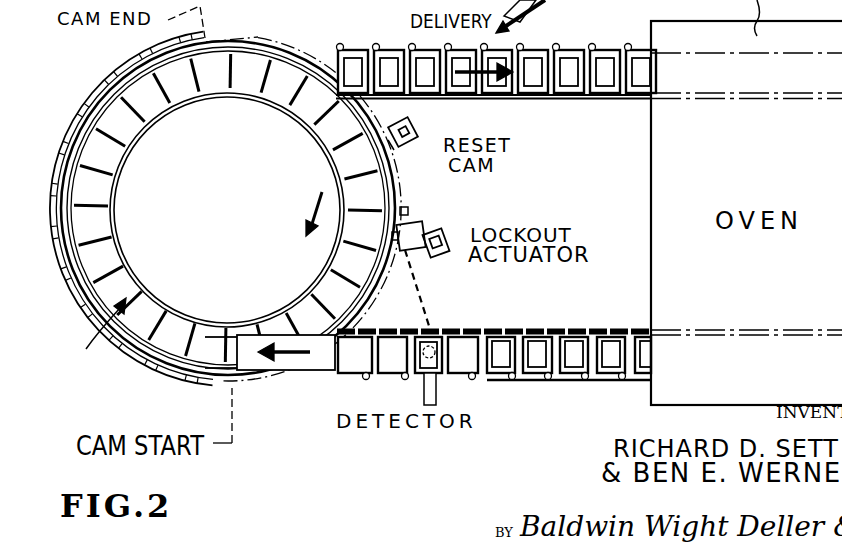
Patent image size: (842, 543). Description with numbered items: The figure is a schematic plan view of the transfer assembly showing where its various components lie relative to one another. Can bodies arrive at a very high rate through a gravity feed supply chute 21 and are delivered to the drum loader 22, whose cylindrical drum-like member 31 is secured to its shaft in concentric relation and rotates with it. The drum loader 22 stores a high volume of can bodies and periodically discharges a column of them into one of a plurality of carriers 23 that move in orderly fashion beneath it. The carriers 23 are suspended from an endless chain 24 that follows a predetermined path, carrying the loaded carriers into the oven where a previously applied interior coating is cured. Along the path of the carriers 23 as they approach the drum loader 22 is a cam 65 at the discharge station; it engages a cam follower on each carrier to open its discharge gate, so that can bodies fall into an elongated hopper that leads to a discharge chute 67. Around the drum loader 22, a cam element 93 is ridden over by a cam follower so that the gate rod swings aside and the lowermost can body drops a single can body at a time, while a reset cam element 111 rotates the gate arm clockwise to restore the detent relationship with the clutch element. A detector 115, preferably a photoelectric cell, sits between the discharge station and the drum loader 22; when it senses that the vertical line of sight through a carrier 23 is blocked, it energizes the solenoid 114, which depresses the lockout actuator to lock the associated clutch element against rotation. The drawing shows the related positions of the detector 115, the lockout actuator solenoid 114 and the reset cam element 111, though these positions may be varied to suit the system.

The gravity feed supply chute 21 is at (302, 373).
The drum loader 22 is at (93, 340).
The carriers 23 is at (386, 44).
The endless chain 24 is at (565, 327).
The cylindrical drum-like member 31 is at (290, 118).
The cam 65 is at (609, 386).
The discharge chute 67 is at (564, 0).
The cam element 93 is at (70, 278).
The cam element 111 is at (427, 158).
The solenoid 114 is at (422, 248).
The detector 115 is at (407, 332).